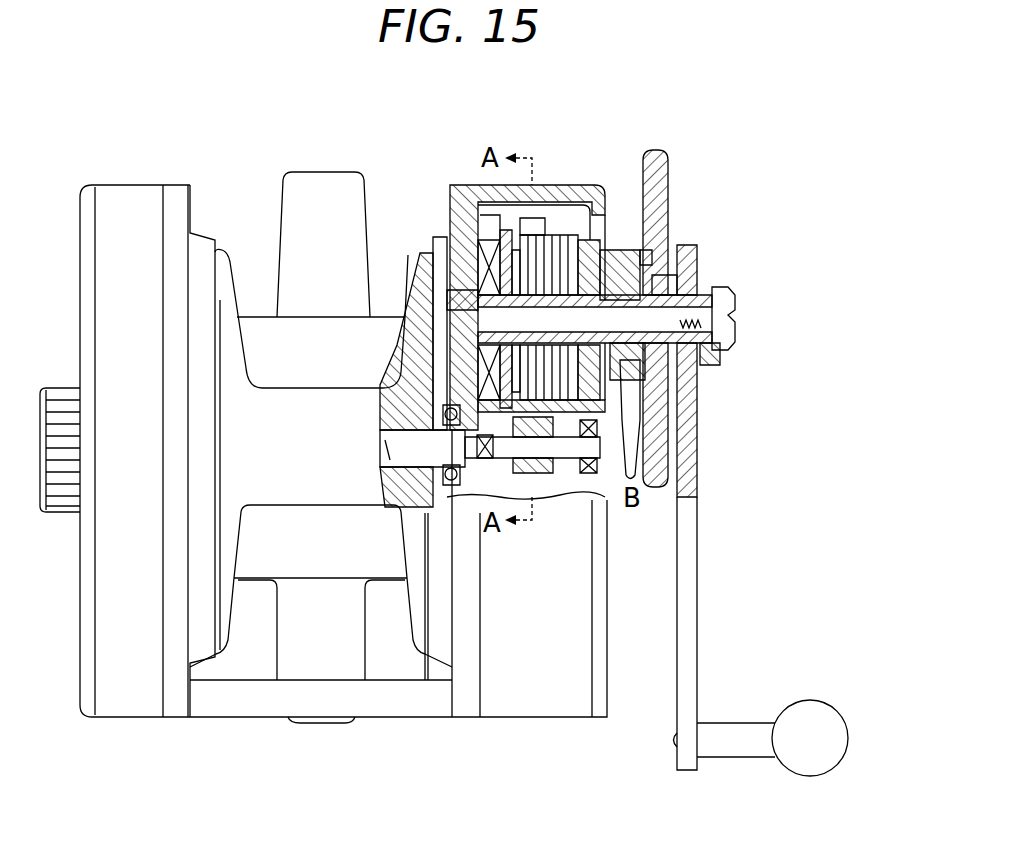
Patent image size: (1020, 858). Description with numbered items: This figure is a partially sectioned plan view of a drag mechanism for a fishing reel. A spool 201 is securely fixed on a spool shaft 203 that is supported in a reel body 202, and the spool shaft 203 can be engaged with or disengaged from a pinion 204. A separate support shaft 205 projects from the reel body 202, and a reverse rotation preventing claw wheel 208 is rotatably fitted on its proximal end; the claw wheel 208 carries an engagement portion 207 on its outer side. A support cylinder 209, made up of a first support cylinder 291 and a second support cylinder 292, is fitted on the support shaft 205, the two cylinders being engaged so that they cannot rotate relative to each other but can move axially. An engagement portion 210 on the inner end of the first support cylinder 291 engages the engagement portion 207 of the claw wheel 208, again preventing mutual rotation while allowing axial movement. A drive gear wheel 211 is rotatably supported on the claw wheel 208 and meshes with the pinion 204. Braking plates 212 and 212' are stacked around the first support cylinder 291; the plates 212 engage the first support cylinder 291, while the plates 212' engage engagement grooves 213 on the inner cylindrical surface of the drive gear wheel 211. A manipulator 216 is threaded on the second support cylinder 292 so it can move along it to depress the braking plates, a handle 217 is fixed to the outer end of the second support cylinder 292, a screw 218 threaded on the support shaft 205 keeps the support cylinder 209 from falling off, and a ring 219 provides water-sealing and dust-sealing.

The spool 201 is at (280, 490).
The reel body 202 is at (460, 185).
The spool shaft 203 is at (382, 468).
The pinion 204 is at (547, 473).
The support shaft 205 is at (720, 340).
The engagement portion 207 is at (465, 215).
The reverse rotation preventing claw wheel 208 is at (470, 238).
The support cylinder 209 is at (752, 196).
The engagement portion 210 is at (440, 298).
The drive gear wheel 211 is at (523, 205).
The braking plates 212 is at (549, 261).
The braking plates 212' is at (555, 242).
The engagement grooves 213 is at (592, 218).
The manipulator 216 is at (658, 150).
The handle 217 is at (698, 445).
The screw 218 is at (737, 300).
The ring 219 is at (615, 250).
The first support cylinder 291 is at (655, 240).
The second support cylinder 292 is at (690, 246).